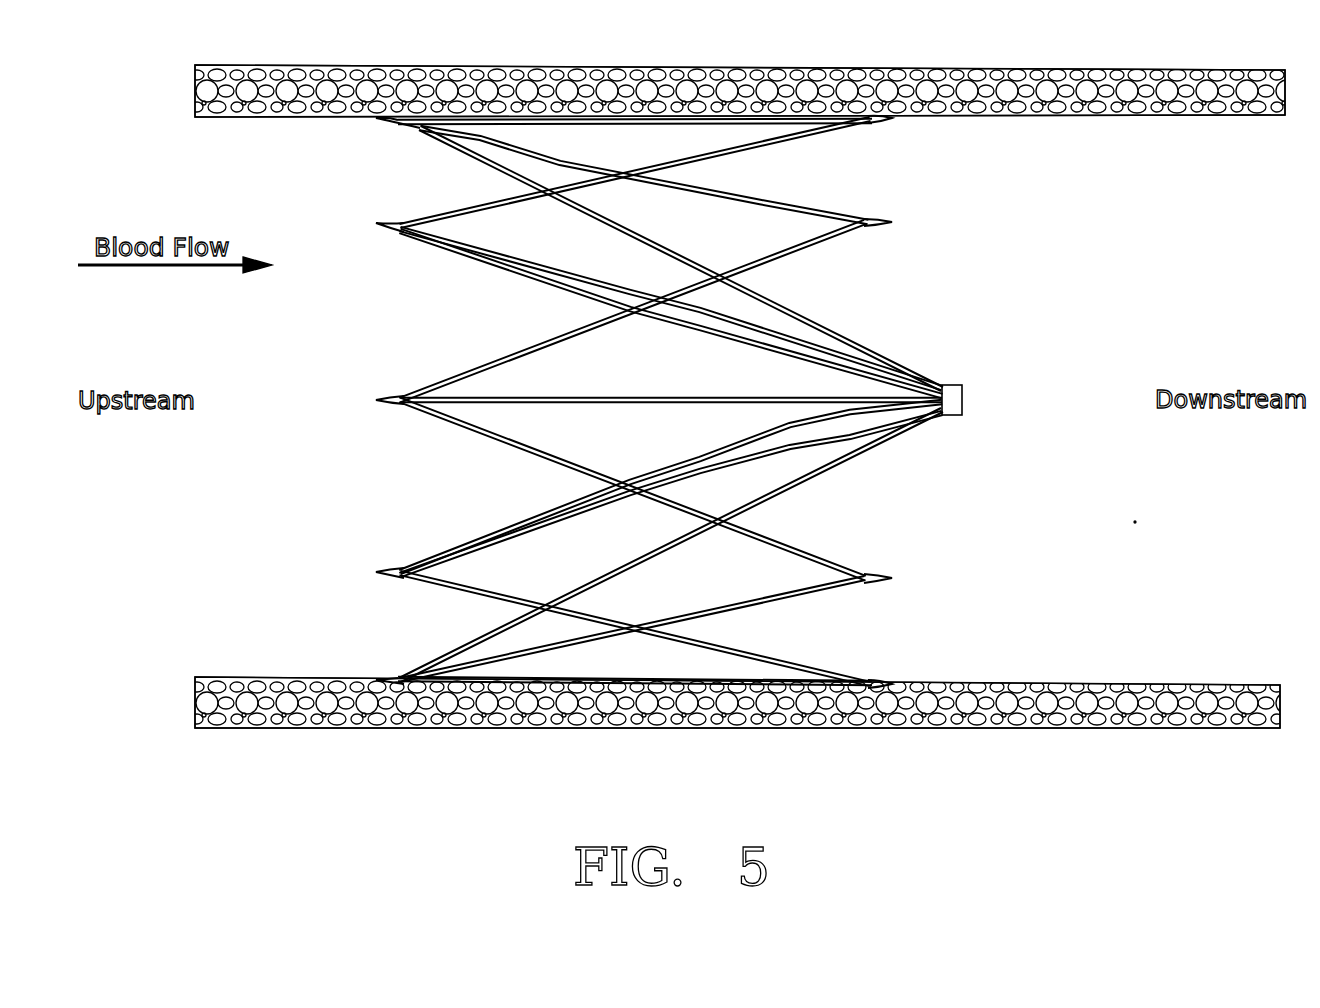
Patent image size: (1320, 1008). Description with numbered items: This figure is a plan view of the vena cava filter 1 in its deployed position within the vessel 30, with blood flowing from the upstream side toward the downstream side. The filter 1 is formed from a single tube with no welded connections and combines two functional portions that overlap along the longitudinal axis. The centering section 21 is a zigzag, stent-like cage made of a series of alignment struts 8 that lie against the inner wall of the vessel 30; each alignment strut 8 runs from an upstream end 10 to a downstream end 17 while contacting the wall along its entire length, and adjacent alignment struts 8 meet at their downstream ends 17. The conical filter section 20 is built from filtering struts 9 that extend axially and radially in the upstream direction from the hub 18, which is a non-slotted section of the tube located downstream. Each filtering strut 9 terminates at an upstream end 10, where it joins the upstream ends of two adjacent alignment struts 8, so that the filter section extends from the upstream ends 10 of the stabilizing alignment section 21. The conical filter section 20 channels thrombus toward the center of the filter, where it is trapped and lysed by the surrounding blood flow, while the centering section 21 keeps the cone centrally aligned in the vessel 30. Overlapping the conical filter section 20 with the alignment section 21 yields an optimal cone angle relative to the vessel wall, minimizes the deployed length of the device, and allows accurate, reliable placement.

The vena cava filter 1 is at (651, 402).
The alignment strut 8 is at (456, 136).
The filtering strut 9 is at (862, 316).
The upstream end 10 is at (372, 574).
The downstream end 17 is at (893, 121).
The hub 18 is at (953, 416).
The conical filter section 20 is at (810, 483).
The centering section 21 is at (678, 125).
The vessel 30 is at (1150, 117).